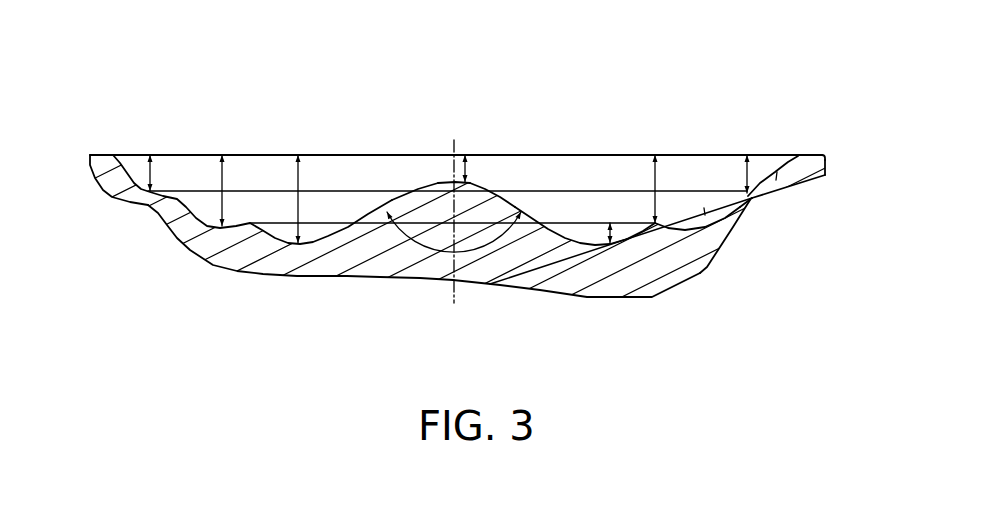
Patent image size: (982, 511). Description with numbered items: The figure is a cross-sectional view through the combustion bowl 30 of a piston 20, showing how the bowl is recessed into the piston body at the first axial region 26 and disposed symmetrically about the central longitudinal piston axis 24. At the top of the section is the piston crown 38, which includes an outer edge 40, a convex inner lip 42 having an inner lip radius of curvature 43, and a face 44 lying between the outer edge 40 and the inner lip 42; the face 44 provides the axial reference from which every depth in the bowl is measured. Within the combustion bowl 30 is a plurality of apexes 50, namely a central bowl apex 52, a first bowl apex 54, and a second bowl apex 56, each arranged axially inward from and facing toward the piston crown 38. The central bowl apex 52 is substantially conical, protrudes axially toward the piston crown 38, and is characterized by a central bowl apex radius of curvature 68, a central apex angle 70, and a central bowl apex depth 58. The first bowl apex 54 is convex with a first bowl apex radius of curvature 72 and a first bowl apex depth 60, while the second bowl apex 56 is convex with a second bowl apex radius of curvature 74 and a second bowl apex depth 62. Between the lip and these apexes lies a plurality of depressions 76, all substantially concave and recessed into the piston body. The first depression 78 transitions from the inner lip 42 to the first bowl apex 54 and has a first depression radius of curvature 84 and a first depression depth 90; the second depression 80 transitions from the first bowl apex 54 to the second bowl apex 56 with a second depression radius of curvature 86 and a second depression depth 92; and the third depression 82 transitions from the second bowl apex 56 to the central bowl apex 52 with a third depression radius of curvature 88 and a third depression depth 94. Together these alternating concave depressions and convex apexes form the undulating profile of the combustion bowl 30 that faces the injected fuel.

The piston 20 is at (461, 255).
The central longitudinal piston axis 24 is at (445, 275).
The first axial region 26 is at (102, 168).
The combustion bowl 30 is at (375, 165).
The piston crown 38 is at (804, 160).
The outer edge 40 is at (825, 153).
The inner lip 42 is at (776, 178).
The inner lip radius of curvature 43 is at (788, 190).
The face 44 is at (803, 158).
The plurality of apexes 50 is at (461, 189).
The central bowl apex 52 is at (453, 214).
The first bowl apex 54 is at (747, 192).
The second bowl apex 56 is at (657, 222).
The central bowl apex depth 58 is at (466, 160).
The first bowl apex depth 60 is at (745, 186).
The second bowl apex depth 62 is at (655, 158).
The central bowl apex radius of curvature 68 is at (456, 185).
The central apex angle 70 is at (452, 250).
The first bowl apex radius of curvature 72 is at (751, 203).
The second bowl apex radius of curvature 74 is at (660, 237).
The plurality of depressions 76 is at (662, 160).
The first depression 78 is at (778, 141).
The second depression 80 is at (716, 221).
The third depression 82 is at (590, 237).
The first depression radius of curvature 84 is at (776, 180).
The second depression radius of curvature 86 is at (705, 215).
The third depression radius of curvature 88 is at (609, 232).
The first depression depth 90 is at (151, 172).
The second depression depth 92 is at (223, 172).
The third depression depth 94 is at (300, 172).